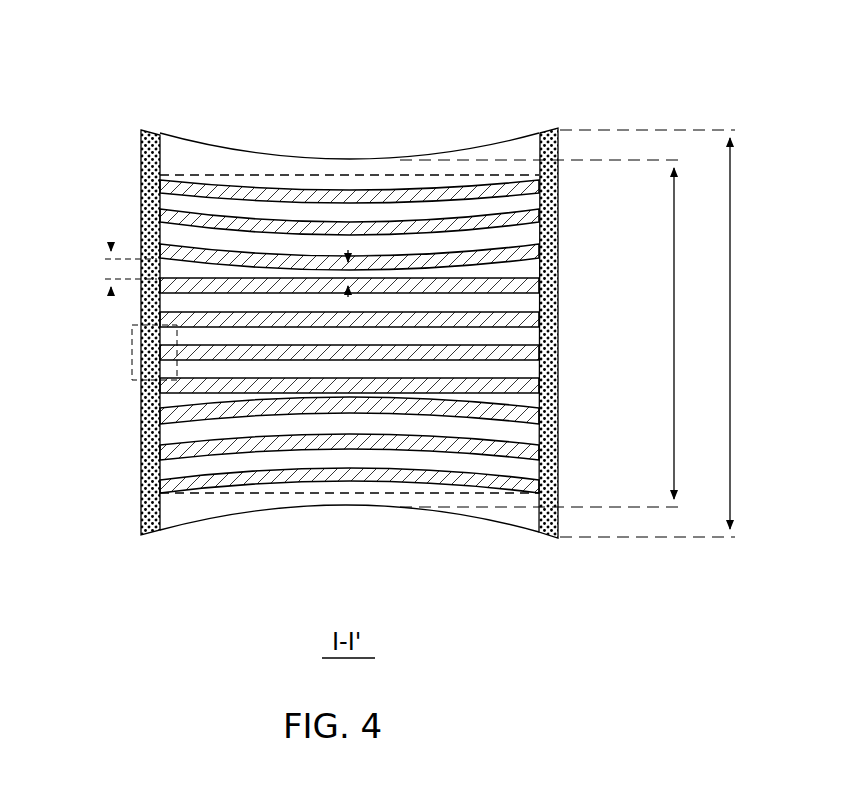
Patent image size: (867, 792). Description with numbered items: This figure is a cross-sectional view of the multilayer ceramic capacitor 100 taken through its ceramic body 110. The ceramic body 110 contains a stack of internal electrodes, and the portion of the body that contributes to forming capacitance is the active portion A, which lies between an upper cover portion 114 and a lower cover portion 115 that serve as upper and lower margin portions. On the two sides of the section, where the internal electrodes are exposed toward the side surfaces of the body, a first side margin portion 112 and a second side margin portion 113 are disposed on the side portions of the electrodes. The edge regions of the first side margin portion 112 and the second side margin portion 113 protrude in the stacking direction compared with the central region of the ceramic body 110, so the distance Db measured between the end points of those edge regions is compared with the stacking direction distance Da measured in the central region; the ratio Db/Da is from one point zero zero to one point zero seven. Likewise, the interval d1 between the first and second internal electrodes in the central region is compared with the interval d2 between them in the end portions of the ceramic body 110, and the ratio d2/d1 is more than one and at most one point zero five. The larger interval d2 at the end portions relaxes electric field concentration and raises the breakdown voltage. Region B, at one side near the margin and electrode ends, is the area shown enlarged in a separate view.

The multilayer ceramic capacitor 100 is at (350, 300).
The ceramic body 110 is at (349, 339).
The first side margin portion 112 is at (153, 538).
The second side margin portion 113 is at (548, 530).
The upper cover portion 114 is at (489, 146).
The lower cover portion 115 is at (497, 516).
The interval in the central region d1 is at (345, 272).
The interval in the end portions d2 is at (109, 269).
The active portion A is at (546, 400).
The region B is at (123, 336).
The stacking direction distance in the central region Da is at (540, 333).
The distance between end points of the edge regions Db is at (647, 333).